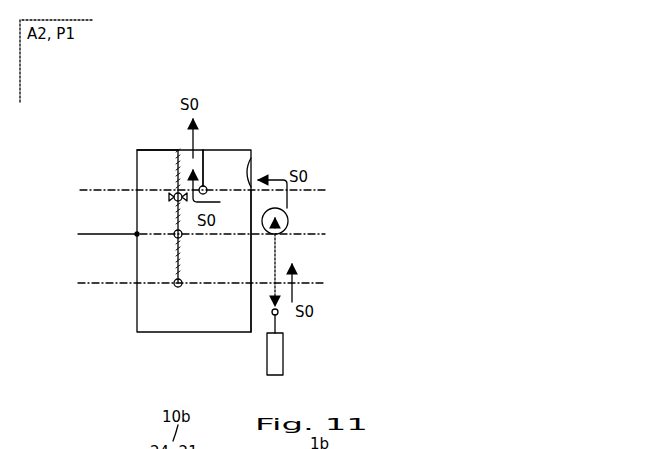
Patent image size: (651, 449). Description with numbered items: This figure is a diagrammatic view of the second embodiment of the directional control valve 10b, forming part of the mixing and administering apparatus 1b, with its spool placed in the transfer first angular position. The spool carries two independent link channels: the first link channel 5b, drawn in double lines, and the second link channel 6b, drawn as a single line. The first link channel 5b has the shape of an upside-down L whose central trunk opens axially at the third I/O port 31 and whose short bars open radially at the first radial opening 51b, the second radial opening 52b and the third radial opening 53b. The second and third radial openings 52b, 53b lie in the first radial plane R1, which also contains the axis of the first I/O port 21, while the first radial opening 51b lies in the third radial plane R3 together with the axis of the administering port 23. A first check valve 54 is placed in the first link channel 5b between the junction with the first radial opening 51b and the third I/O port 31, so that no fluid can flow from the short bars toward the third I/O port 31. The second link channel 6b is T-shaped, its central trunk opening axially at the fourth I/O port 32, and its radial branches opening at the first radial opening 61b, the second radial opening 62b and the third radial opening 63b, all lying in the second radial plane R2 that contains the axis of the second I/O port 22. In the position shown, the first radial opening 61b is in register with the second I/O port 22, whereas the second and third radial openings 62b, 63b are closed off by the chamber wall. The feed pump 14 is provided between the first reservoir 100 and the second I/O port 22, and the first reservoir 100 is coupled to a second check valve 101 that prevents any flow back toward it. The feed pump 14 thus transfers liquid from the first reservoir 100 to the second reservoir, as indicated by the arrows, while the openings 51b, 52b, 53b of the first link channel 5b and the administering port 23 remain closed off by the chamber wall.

The directional control valve 10b is at (185, 73).
The mixing and administering apparatus 1b is at (259, 76).
The third I/O port 31 is at (178, 150).
The fourth I/O port 32 is at (203, 150).
The first link channel 5b is at (155, 150).
The second link channel 6b is at (205, 167).
The first radial opening 61b is at (251, 162).
The second I/O port 22 is at (272, 178).
The second radial plane R2 is at (315, 188).
The second radial opening 62b is at (104, 187).
The third radial opening 63b is at (104, 187).
The first check valve 54 is at (175, 188).
The feed pump 14 is at (290, 212).
The administering port 23 is at (118, 235).
The third radial plane R3 is at (312, 237).
The first radial opening 51b is at (167, 238).
The third radial opening 53b is at (143, 336).
The second radial opening 52b is at (178, 287).
The first I/O port 21 is at (262, 293).
The first radial plane R1 is at (300, 283).
The second check valve 101 is at (280, 317).
The first reservoir 100 is at (277, 357).